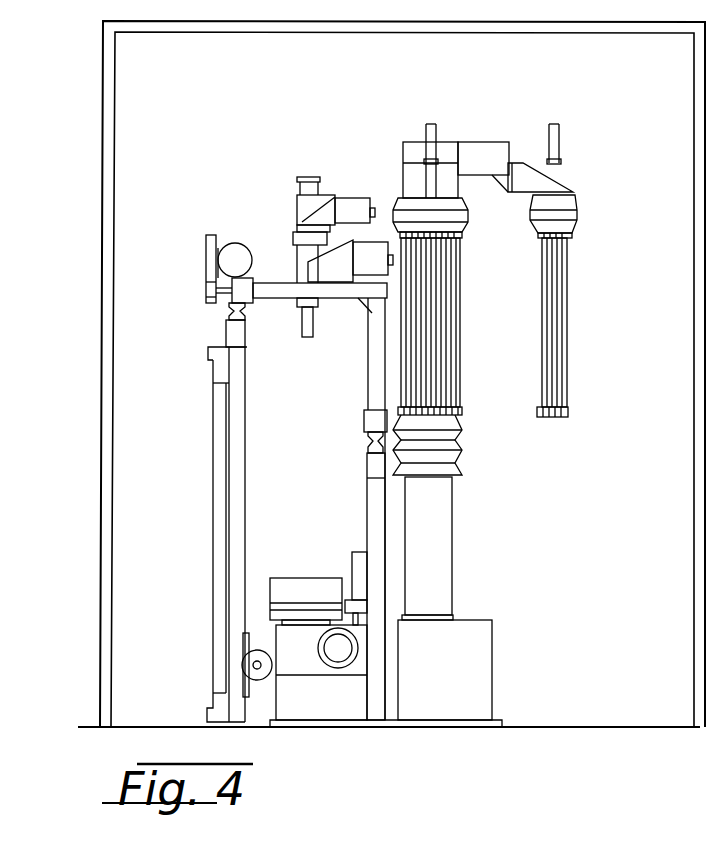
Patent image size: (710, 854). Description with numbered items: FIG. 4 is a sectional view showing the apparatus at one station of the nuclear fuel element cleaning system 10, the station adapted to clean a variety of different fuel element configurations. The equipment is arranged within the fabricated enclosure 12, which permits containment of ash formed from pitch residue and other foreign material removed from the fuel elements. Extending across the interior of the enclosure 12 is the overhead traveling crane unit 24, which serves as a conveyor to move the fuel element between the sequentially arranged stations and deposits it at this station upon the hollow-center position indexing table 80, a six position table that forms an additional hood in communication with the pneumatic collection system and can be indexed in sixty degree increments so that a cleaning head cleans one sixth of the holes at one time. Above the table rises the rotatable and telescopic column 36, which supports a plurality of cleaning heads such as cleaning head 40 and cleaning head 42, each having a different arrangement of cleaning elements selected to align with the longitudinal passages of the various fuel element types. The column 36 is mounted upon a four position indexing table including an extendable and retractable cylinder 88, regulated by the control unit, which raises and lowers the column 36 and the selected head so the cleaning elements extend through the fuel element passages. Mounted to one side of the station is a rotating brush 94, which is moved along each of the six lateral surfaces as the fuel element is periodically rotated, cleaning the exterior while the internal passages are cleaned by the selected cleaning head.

The nuclear fuel element cleaning system 10 is at (98, 70).
The fabricated enclosure 12 is at (100, 187).
The overhead traveling crane unit 24 is at (198, 292).
The rotatable and telescopic column 36 is at (487, 141).
The cleaning head 40 is at (461, 361).
The cleaning head 42 is at (574, 370).
The hollow-center position indexing table 80 is at (294, 577).
The extendable and retractable cylinder 88 is at (458, 458).
The rotating brush 94 is at (280, 683).